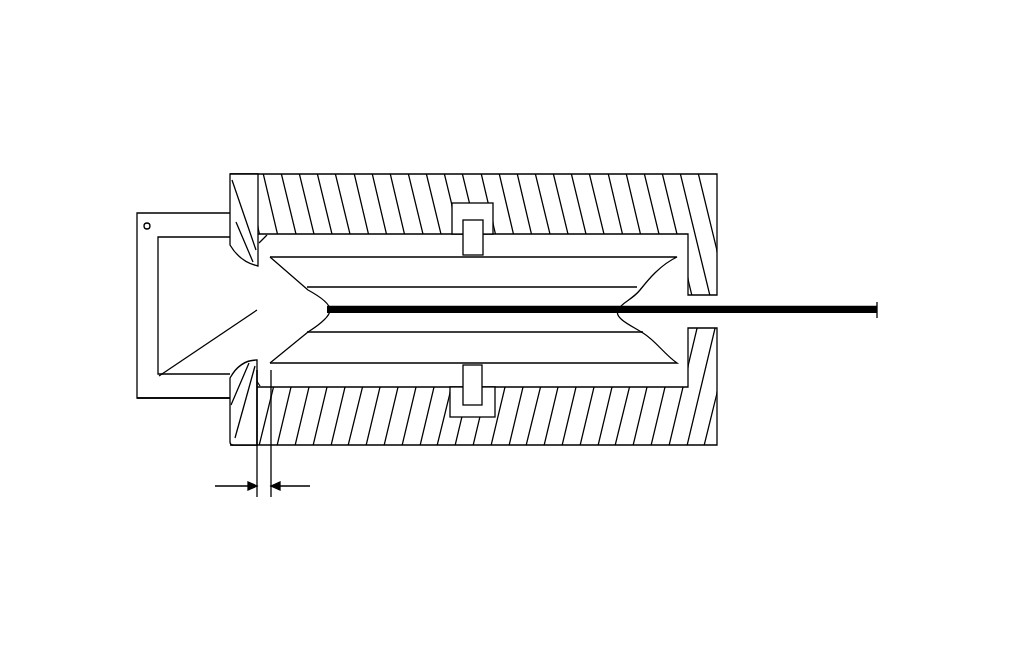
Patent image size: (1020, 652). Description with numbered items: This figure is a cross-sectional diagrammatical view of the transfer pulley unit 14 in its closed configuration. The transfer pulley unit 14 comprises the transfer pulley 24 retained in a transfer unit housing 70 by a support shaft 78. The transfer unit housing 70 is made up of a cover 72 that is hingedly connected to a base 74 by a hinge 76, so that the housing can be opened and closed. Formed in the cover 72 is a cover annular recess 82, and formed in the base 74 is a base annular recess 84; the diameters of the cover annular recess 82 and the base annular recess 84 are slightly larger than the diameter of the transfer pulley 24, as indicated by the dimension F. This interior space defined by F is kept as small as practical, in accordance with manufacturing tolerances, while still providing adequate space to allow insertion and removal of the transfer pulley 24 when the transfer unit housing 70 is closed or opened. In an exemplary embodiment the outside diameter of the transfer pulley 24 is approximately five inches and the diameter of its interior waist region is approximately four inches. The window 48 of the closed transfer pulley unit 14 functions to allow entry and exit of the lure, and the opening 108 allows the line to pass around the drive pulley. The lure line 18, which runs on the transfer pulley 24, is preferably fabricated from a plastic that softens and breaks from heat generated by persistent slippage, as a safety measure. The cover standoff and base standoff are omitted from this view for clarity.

The transfer pulley unit 14 is at (645, 53).
The transfer unit housing 70 is at (713, 141).
The cover 72 is at (713, 173).
The base 74 is at (555, 447).
The hinge 76 is at (142, 290).
The support shaft 78 is at (473, 407).
The cover annular recess 82 is at (228, 190).
The base annular recess 84 is at (395, 378).
The transfer pulley 24 is at (667, 367).
The lure line 18 is at (802, 312).
The window 48 is at (190, 287).
The opening 108 is at (137, 398).